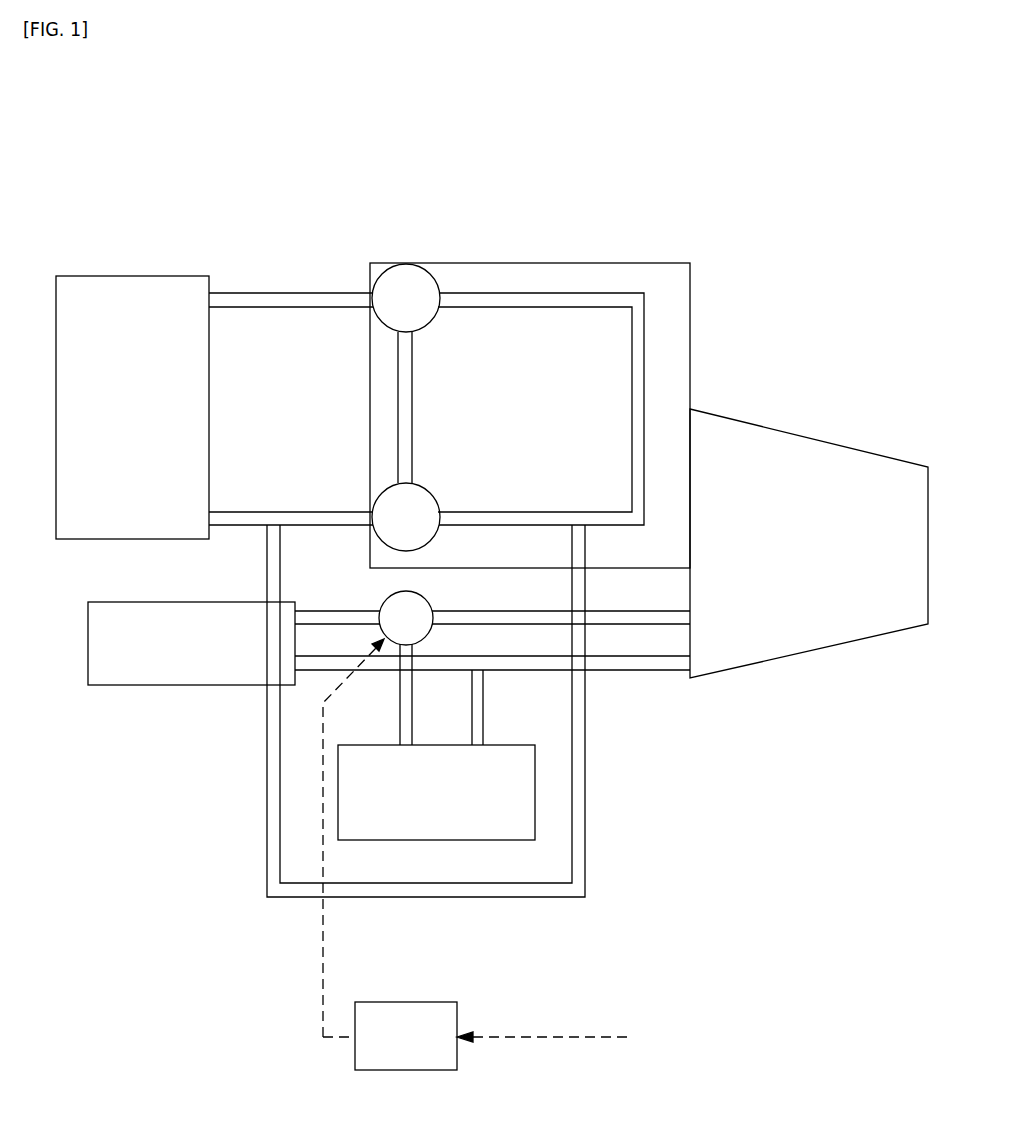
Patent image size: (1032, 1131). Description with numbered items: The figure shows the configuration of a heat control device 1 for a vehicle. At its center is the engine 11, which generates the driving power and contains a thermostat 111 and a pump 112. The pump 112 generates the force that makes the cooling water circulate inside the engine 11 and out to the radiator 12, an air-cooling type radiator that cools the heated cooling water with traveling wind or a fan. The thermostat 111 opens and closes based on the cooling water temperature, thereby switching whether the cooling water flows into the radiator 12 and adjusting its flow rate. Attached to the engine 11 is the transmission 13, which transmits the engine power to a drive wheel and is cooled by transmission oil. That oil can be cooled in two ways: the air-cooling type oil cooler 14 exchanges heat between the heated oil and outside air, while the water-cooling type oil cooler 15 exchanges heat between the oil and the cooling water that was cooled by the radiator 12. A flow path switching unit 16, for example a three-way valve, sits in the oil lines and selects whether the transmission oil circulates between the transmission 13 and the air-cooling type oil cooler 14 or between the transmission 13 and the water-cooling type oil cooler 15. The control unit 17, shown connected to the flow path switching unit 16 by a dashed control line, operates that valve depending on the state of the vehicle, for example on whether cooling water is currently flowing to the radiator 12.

The heat control device 1 is at (754, 252).
The engine 11 is at (655, 287).
The thermostat 111 is at (404, 290).
The pump 112 is at (425, 503).
The radiator 12 is at (178, 298).
The transmission 13 is at (858, 470).
The air-cooling type oil cooler 14 is at (518, 772).
The water-cooling type oil cooler 15 is at (96, 621).
The flow path switching unit 16 is at (384, 611).
The control unit 17 is at (420, 1030).